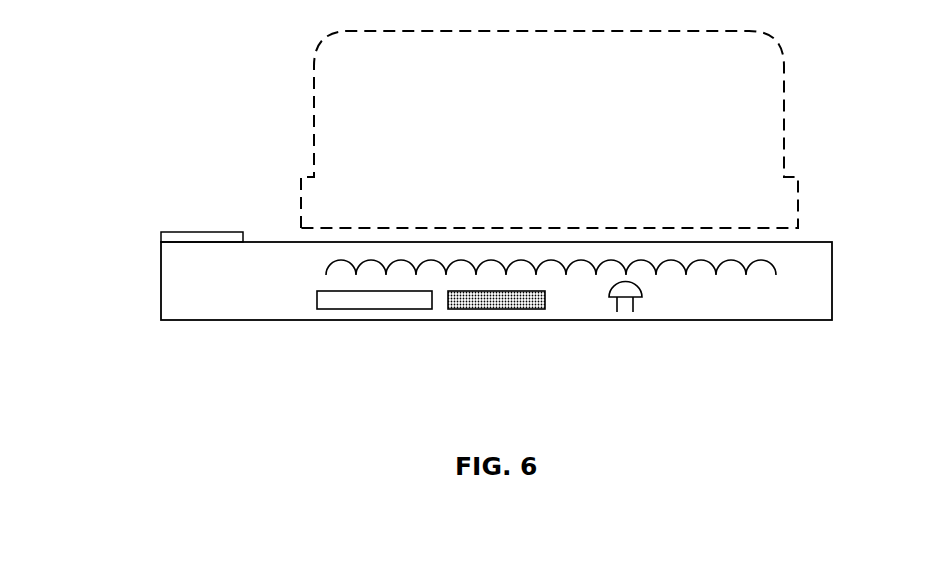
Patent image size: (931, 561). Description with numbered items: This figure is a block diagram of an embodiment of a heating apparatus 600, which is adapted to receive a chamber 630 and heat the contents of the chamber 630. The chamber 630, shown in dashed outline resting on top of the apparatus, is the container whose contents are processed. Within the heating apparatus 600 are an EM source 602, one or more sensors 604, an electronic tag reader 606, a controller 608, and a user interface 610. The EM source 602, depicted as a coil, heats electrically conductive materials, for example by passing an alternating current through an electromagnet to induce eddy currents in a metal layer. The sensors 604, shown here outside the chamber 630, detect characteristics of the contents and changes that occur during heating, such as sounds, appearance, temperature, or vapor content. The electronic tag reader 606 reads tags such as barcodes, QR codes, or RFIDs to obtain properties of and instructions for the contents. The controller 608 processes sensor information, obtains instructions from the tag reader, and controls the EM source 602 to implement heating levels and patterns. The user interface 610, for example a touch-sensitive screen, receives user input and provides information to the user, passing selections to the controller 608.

The heating apparatus 600 is at (146, 275).
The EM source 602 is at (684, 287).
The sensors 604 is at (609, 297).
The electronic tag reader 606 is at (500, 309).
The controller 608 is at (345, 309).
The user interface 610 is at (196, 231).
The chamber 630 is at (549, 129).